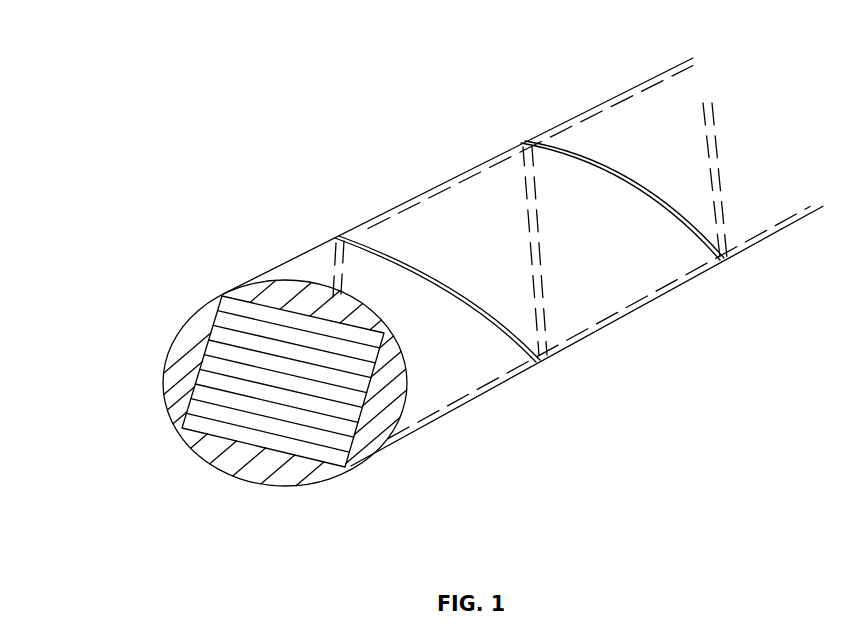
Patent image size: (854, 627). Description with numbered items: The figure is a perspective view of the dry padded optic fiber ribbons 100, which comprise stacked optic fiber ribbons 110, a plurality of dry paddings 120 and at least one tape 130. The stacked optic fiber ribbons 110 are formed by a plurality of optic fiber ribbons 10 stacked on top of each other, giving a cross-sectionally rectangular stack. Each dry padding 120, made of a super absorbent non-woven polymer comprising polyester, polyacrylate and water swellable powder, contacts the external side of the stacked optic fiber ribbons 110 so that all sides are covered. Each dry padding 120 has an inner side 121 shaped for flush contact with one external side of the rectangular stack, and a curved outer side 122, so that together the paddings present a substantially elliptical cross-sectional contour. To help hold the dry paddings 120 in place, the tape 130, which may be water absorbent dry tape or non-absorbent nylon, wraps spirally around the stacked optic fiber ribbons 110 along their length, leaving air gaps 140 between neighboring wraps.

The dry padded optic fiber ribbons 100 is at (48, 33).
The optic fiber ribbon 10 is at (215, 437).
The stacked optic fiber ribbons 110 is at (267, 333).
The dry padding 120 is at (190, 350).
The inner side 121 is at (347, 443).
The outer side 122 is at (400, 413).
The tape 130 is at (642, 133).
The air gap 140 is at (670, 203).